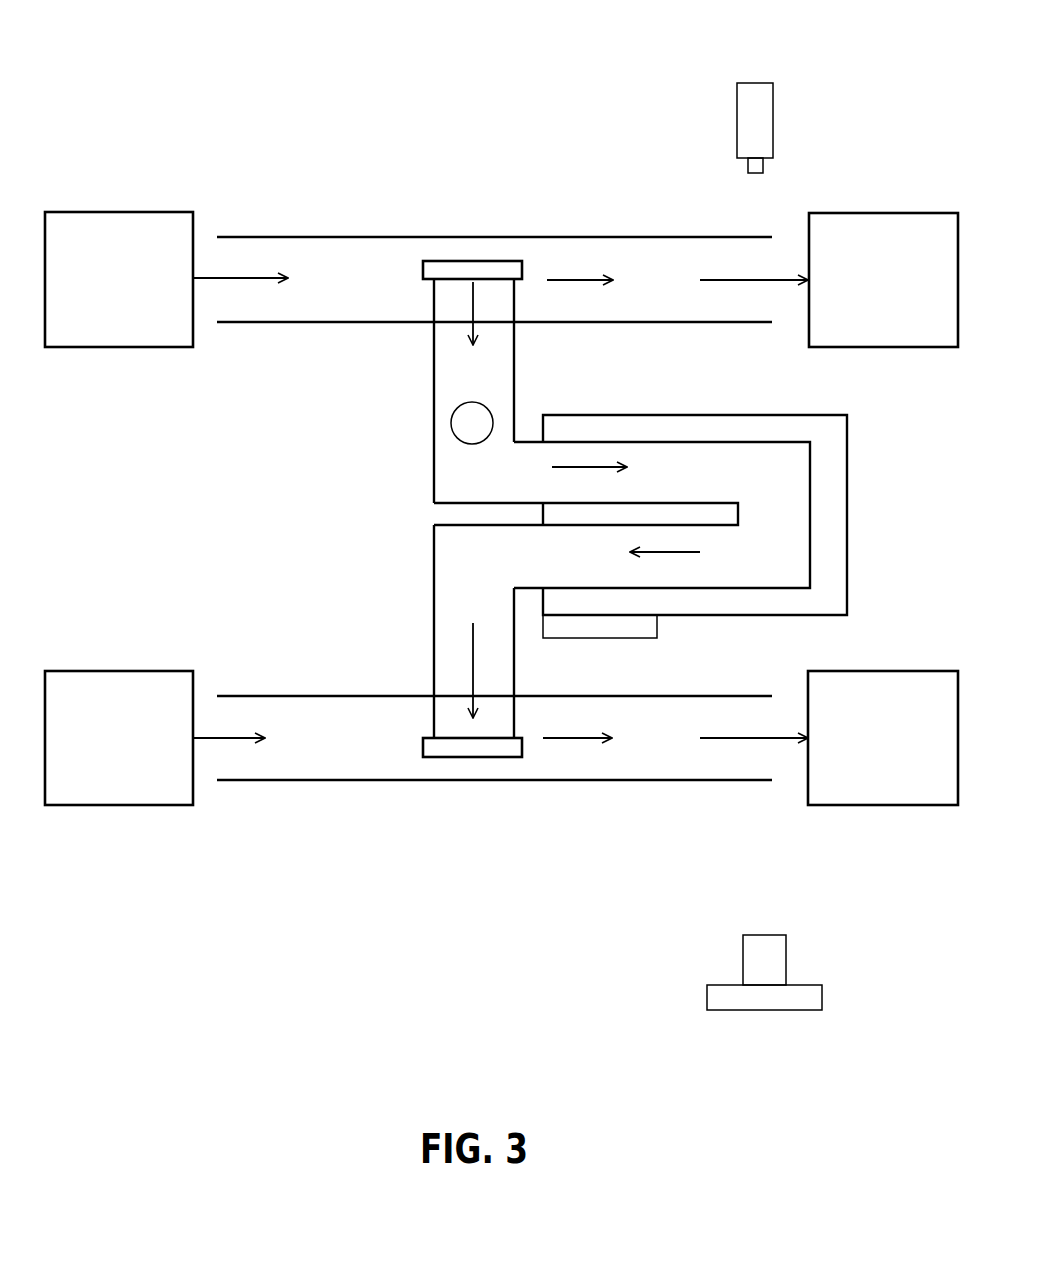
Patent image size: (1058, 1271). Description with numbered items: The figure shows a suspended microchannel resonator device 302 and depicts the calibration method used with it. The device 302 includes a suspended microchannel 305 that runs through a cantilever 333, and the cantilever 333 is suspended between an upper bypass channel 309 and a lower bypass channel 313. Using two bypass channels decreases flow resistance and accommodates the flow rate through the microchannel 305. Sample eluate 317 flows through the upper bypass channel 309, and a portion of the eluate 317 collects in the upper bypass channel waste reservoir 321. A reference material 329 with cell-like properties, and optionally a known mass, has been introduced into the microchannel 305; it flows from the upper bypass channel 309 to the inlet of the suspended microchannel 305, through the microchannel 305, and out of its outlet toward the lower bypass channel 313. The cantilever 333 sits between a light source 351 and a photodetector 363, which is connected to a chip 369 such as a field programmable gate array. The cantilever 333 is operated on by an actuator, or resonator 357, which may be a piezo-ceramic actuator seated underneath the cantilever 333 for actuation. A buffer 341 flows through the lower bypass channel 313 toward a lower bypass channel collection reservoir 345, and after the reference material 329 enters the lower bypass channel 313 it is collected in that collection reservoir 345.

The suspended microchannel resonator (SMR) device 302 is at (480, 62).
The microchannel 305 is at (434, 370).
The upper bypass channel 309 is at (387, 237).
The lower bypass channel 313 is at (355, 780).
The sample eluate 317 is at (94, 293).
The upper bypass channel waste reservoir 321 is at (863, 295).
The reference material 329 is at (452, 422).
The cantilever 333 is at (847, 505).
The buffer 341 is at (94, 753).
The lower bypass channel collection reservoir 345 is at (863, 753).
The light source 351 is at (773, 105).
The resonator 357 is at (633, 638).
The photodetector 363 is at (786, 959).
The chip 369 is at (810, 985).